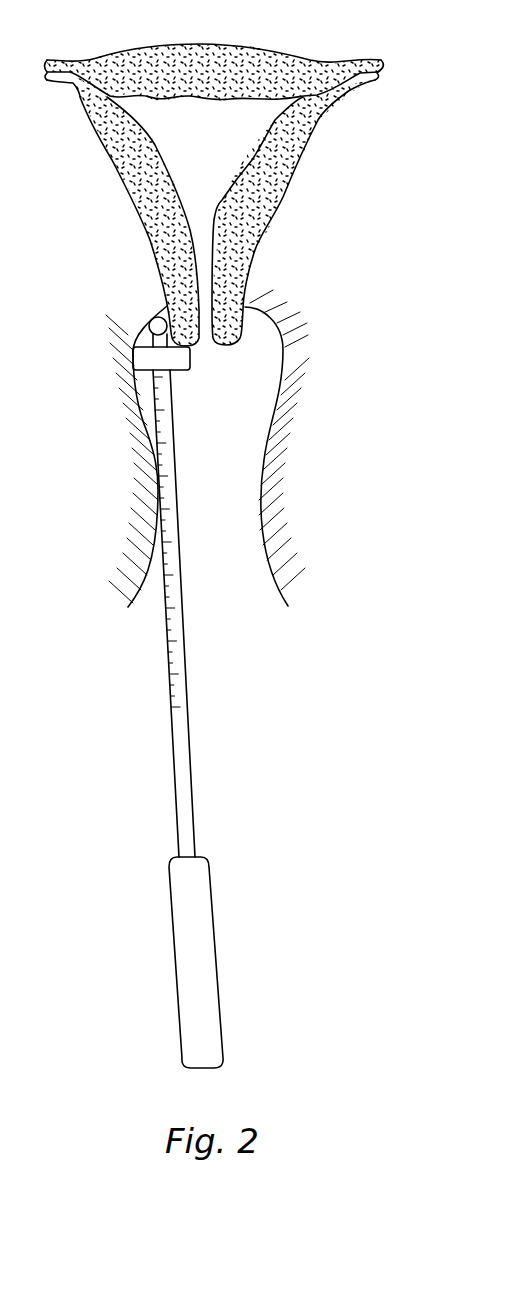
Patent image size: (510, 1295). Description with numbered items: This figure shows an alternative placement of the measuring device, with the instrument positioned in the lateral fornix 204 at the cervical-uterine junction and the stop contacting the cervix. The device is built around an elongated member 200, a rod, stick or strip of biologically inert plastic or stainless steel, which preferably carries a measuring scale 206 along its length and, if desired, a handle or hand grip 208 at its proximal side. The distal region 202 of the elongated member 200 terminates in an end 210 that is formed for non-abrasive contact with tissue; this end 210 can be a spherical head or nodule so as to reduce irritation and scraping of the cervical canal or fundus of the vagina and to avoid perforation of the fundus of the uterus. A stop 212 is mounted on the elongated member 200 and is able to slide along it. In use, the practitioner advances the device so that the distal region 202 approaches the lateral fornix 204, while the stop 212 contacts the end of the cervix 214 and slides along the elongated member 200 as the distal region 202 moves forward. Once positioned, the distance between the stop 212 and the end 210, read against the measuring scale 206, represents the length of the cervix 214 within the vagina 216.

The elongated member 200 is at (177, 690).
The distal region 202 is at (132, 349).
The lateral fornix 204 is at (166, 309).
The measuring scale 206 is at (160, 482).
The handle 208 is at (218, 972).
The end 210 is at (149, 326).
The stop 212 is at (190, 370).
The cervix 214 is at (233, 345).
The vagina 216 is at (228, 497).